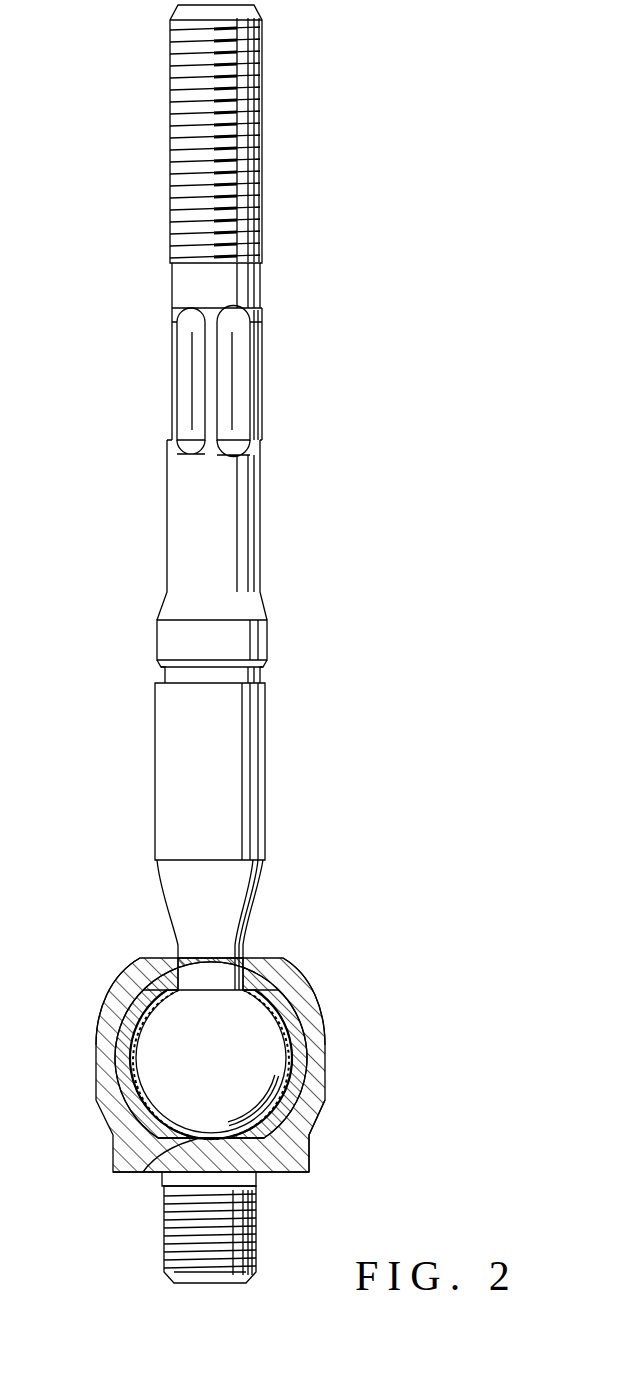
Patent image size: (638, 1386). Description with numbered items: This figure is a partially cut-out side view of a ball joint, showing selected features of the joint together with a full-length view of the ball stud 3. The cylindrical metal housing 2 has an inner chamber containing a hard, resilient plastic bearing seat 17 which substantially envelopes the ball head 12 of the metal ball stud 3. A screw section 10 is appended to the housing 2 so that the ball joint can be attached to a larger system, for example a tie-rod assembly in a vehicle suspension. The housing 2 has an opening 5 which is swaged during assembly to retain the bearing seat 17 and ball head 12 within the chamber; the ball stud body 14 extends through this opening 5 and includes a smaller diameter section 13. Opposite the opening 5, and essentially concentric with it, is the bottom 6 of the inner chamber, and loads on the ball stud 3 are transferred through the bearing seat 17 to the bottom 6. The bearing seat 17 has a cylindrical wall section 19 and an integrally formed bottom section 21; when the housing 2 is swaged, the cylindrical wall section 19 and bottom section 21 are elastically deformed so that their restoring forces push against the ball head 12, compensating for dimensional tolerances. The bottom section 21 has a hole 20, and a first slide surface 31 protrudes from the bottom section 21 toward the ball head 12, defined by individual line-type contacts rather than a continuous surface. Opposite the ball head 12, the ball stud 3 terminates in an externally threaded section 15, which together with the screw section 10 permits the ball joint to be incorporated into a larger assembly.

The housing 2 is at (325, 1073).
The ball stud 3 is at (267, 790).
The opening 5 is at (257, 960).
The bottom 6 is at (282, 1175).
The screw section 10 is at (165, 1254).
The ball head 12 is at (257, 1018).
The smaller diameter section 13 is at (223, 957).
The ball stud body 14 is at (175, 752).
The externally threaded section 15 is at (170, 132).
The bearing seat 17 is at (297, 1030).
The cylindrical wall section 19 is at (137, 1013).
The hole 20 is at (143, 1172).
The bottom section 21 is at (297, 1133).
The first slide surface 31 is at (160, 1103).